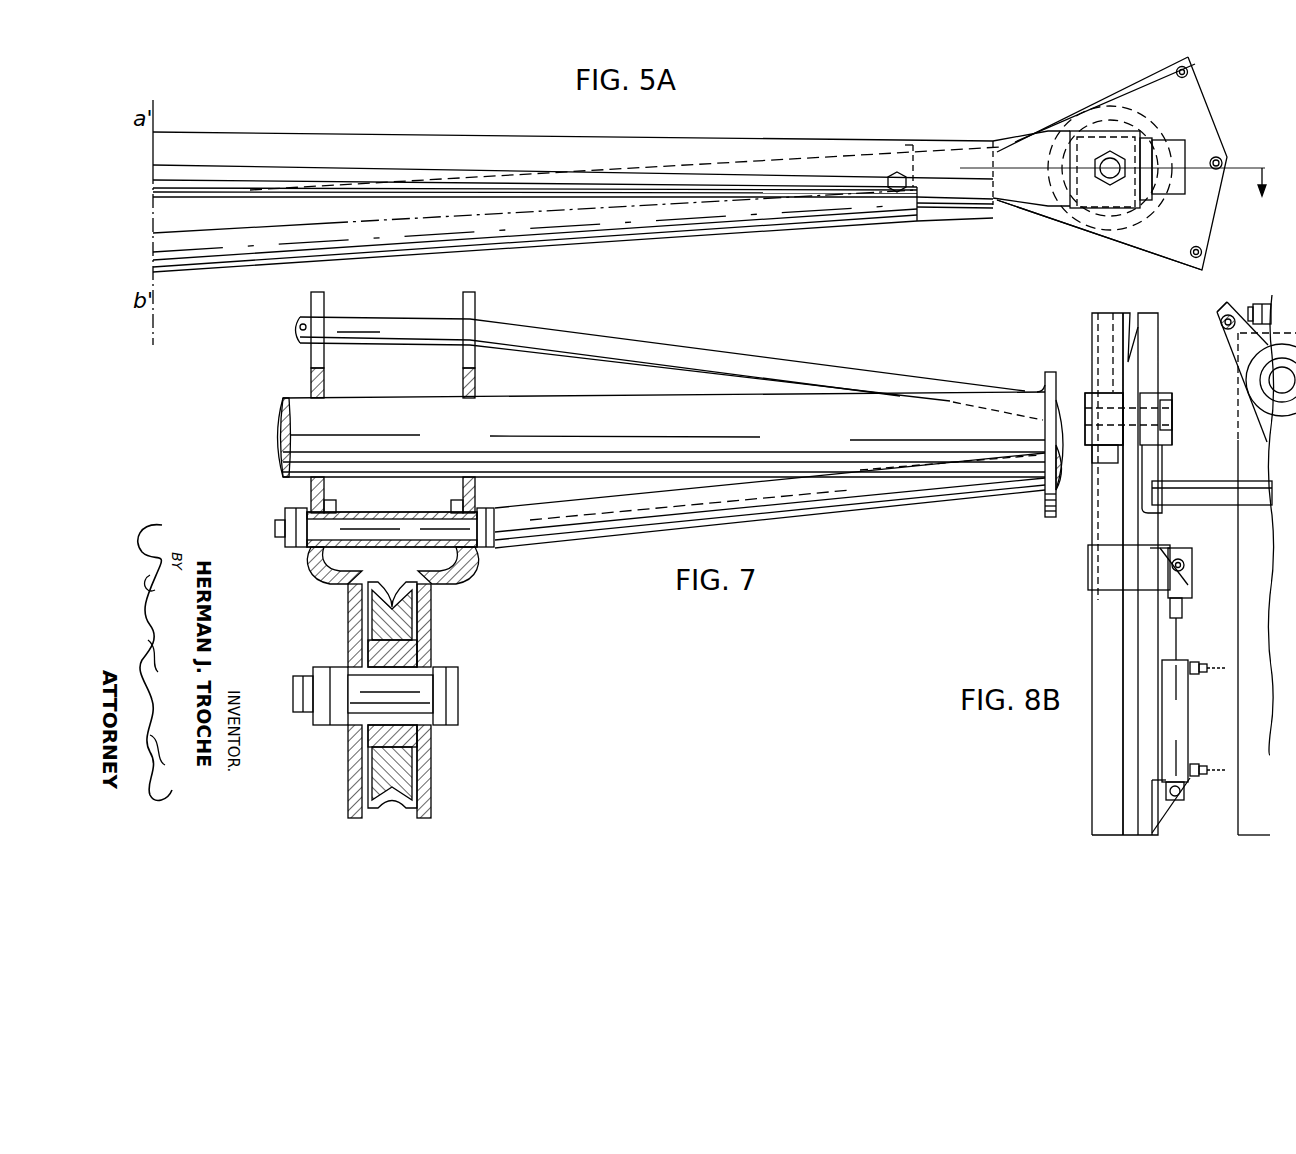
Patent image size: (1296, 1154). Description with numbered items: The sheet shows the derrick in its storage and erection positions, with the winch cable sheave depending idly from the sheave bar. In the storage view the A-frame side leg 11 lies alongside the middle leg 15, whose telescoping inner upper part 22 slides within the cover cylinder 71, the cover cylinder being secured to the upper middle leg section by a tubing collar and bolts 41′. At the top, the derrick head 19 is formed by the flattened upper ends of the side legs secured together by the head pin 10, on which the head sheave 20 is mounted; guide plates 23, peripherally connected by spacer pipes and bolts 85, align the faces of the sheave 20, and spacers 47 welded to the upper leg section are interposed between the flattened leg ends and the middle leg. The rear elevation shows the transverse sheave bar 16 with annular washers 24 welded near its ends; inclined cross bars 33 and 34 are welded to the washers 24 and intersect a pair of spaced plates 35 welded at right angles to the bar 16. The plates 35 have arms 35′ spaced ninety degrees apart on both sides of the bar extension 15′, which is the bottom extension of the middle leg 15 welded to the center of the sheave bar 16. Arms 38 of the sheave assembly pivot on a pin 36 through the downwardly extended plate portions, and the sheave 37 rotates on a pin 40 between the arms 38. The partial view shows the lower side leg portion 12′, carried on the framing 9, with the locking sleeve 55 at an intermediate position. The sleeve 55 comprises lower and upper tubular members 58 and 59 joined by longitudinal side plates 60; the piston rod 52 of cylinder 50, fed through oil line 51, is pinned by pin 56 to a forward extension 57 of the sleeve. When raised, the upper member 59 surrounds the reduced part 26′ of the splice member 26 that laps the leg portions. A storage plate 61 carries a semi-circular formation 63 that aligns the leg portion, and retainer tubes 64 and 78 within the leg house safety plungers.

In FIG. 5A, the A-frame side leg 11 is at (284, 130).
In FIG. 5A, the cover cylinder 71 is at (566, 236).
In FIG. 5A, the middle leg 15 is at (716, 233).
In FIG. 5A, the telescoping inner upper part 22 is at (926, 206).
In FIG. 5A, the bolts 41′ is at (901, 172).
In FIG. 5A, the derrick head 19 is at (1084, 100).
In FIG. 5A, the guide plates 23 is at (1198, 103).
In FIG. 5A, the bolts 85 is at (1187, 68).
In FIG. 5A, the head sheave 20 is at (1068, 222).
In FIG. 5A, the spacers 47 is at (1138, 140).
In FIG. 5A, the head pin 10 is at (1110, 180).
In FIG. 7, the sheave bar 16 is at (590, 408).
In FIG. 8B, the sheave bar 16 is at (1266, 388).
In FIG. 7, the cross bar 33 is at (680, 354).
In FIG. 8B, the cross bar 33 is at (1220, 322).
In FIG. 7, the cross bar 34 is at (578, 530).
In FIG. 7, the sheave bar plates 35 is at (308, 358).
In FIG. 8B, the sheave bar plates 35 is at (1222, 350).
In FIG. 7, the arms of plates 35′ is at (311, 300).
In FIG. 8B, the arms of plates 35′ is at (1224, 303).
In FIG. 7, the pin 36 is at (368, 520).
In FIG. 7, the sheave 37 is at (396, 624).
In FIG. 7, the sheave assembly arms 38 is at (348, 784).
In FIG. 7, the pin 40 is at (420, 692).
In FIG. 8B, the lower portion of side leg 12′ is at (1097, 497).
In FIG. 8B, the retainer tube 78 is at (1114, 352).
In FIG. 8B, the longitudinal side plates 60 is at (1124, 515).
In FIG. 8B, the splice member 26 is at (1120, 388).
In FIG. 8B, the lower reduced part of sleeve 26′ is at (1086, 394).
In FIG. 8B, the upper tubular member 59 is at (1172, 406).
In FIG. 8B, the retainer tube 64 is at (1167, 430).
In FIG. 8B, the semi-circular formation 63 is at (1163, 466).
In FIG. 8B, the storage plate 61 is at (1253, 505).
In FIG. 8B, the locking sleeve 55 is at (1088, 586).
In FIG. 8B, the lower tubular member 58 is at (1162, 552).
In FIG. 8B, the pin 56 is at (1185, 565).
In FIG. 8B, the forward extension 57 is at (1186, 574).
In FIG. 8B, the piston rod 52 is at (1179, 634).
In FIG. 8B, the cylinder 50 is at (1170, 692).
In FIG. 8B, the oil line 51 is at (1222, 778).
In FIG. 8B, the framing 9 is at (1238, 723).
In FIG. 8B, the bar extension 15′ is at (1275, 305).
In FIG. 8B, the annular washers 24 is at (1258, 420).